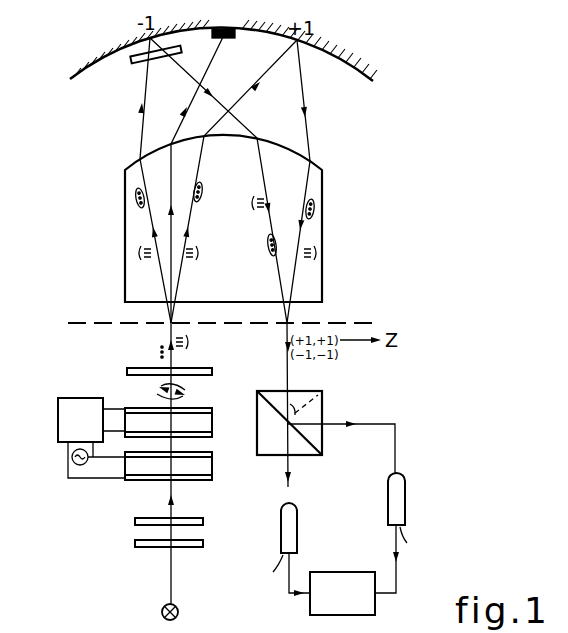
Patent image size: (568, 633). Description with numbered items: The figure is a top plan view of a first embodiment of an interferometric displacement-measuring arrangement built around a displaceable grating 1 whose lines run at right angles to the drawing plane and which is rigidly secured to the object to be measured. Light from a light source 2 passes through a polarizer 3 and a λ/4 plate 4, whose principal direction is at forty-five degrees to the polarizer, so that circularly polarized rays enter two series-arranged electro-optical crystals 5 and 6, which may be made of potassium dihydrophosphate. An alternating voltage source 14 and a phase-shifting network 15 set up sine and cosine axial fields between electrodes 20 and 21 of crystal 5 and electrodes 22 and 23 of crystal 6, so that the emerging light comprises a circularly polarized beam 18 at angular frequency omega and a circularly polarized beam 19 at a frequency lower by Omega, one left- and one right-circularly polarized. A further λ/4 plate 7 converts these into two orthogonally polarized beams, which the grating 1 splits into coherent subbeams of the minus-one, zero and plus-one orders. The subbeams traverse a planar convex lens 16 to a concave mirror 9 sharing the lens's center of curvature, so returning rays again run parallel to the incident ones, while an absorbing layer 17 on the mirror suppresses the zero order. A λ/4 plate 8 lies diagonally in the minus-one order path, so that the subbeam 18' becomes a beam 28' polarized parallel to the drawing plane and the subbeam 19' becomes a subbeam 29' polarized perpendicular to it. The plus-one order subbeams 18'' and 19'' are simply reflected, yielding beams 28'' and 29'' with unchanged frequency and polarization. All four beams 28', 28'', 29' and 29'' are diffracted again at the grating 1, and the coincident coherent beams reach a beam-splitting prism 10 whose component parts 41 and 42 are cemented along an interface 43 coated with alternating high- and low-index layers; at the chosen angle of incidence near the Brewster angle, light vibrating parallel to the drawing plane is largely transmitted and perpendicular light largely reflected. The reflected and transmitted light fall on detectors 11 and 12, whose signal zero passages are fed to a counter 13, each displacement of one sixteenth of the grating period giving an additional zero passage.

The displaceable grating 1 is at (83, 322).
The light source 2 is at (162, 612).
The polarizer 3 is at (135, 544).
The λ/4 plate 4 is at (135, 521).
The electro-optical crystal 5 is at (190, 482).
The electro-optical crystal 6 is at (189, 412).
The λ/4 plate 7 is at (127, 371).
The λ/4 plate 8 is at (134, 64).
The concave mirror 9 is at (96, 62).
The beam-splitting prism 10 is at (308, 428).
The detector 11 is at (406, 500).
The detector 12 is at (298, 528).
The counter 13 is at (367, 615).
The alternating voltage source 14 is at (73, 462).
The phase-shifting network 15 is at (58, 410).
The planar convex lens 16 is at (125, 239).
The absorbing layer 17 is at (224, 40).
The circularly polarized beam 18 is at (140, 348).
The subbeam 18' is at (116, 203).
The subbeam 18'' is at (219, 188).
The circularly polarized beam 19 is at (204, 345).
The subbeam 19' is at (119, 256).
The subbeam 19'' is at (216, 257).
The electrode 20 is at (210, 483).
The electrode 21 is at (212, 457).
The electrode 22 is at (212, 433).
The electrode 23 is at (212, 409).
The beam 28' is at (240, 210).
The beam 28'' is at (338, 208).
The subbeam 29' is at (260, 251).
The beam 29'' is at (339, 257).
The component part 41 is at (291, 398).
The component part 42 is at (278, 443).
The interface 43 is at (305, 447).